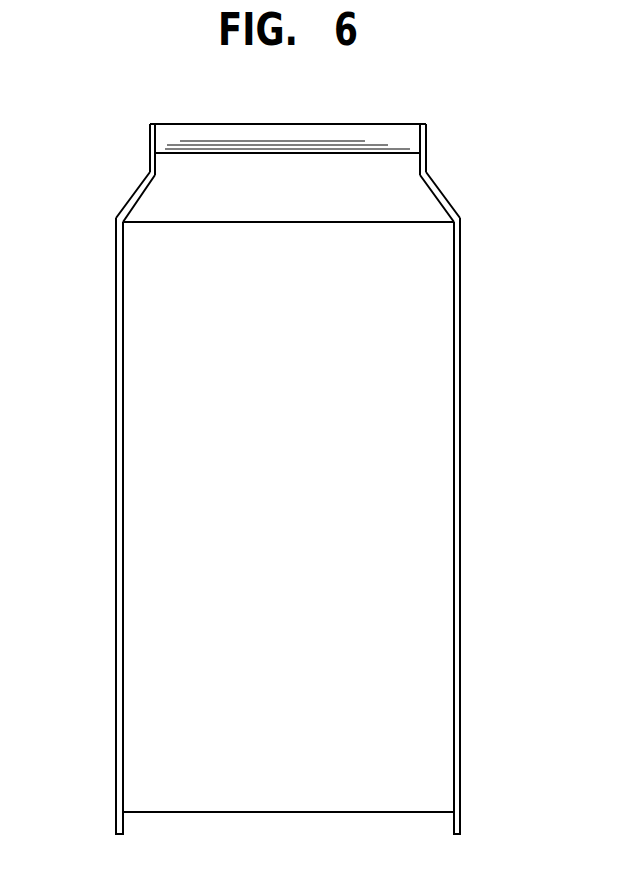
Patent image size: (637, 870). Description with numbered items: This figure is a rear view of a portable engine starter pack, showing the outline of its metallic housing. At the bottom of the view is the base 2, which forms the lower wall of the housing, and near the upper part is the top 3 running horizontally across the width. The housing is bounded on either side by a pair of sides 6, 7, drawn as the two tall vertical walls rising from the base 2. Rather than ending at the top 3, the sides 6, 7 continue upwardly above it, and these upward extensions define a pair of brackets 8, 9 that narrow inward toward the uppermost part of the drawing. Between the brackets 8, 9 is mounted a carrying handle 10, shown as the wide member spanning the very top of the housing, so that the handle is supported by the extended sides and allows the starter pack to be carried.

The base 2 is at (287, 814).
The top 3 is at (236, 221).
The side 6 is at (116, 333).
The side 7 is at (460, 337).
The bracket 8 is at (440, 182).
The bracket 9 is at (150, 170).
The carrying handle 10 is at (355, 123).